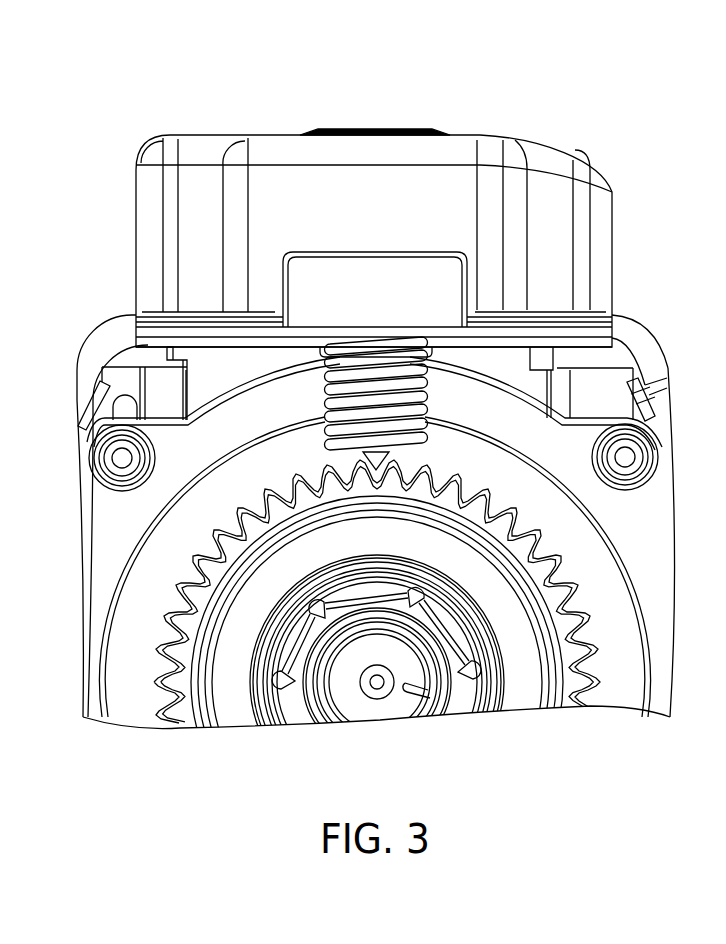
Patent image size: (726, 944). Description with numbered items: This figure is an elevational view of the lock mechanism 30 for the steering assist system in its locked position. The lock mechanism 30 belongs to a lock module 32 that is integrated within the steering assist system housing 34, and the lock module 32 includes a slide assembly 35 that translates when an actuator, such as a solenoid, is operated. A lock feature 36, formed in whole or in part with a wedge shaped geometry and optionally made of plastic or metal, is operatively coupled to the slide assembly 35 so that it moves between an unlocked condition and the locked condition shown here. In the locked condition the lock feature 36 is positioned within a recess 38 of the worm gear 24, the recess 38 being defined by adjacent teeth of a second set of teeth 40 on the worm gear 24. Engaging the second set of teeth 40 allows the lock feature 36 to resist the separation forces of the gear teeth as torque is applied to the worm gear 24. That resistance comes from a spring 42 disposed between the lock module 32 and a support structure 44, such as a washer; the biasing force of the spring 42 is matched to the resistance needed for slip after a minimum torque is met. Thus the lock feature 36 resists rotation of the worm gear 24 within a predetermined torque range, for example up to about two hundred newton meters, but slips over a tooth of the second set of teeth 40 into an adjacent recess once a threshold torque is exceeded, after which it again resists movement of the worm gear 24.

The worm gear 24 is at (625, 697).
The lock mechanism 30 is at (537, 130).
The lock module 32 is at (217, 190).
The steering assist system housing 34 is at (413, 305).
The slide assembly 35 is at (344, 336).
The lock feature 36 is at (426, 449).
The recess 38 is at (150, 683).
The second set of teeth 40 is at (153, 633).
The spring 42 is at (322, 352).
The support structure 44 is at (322, 449).